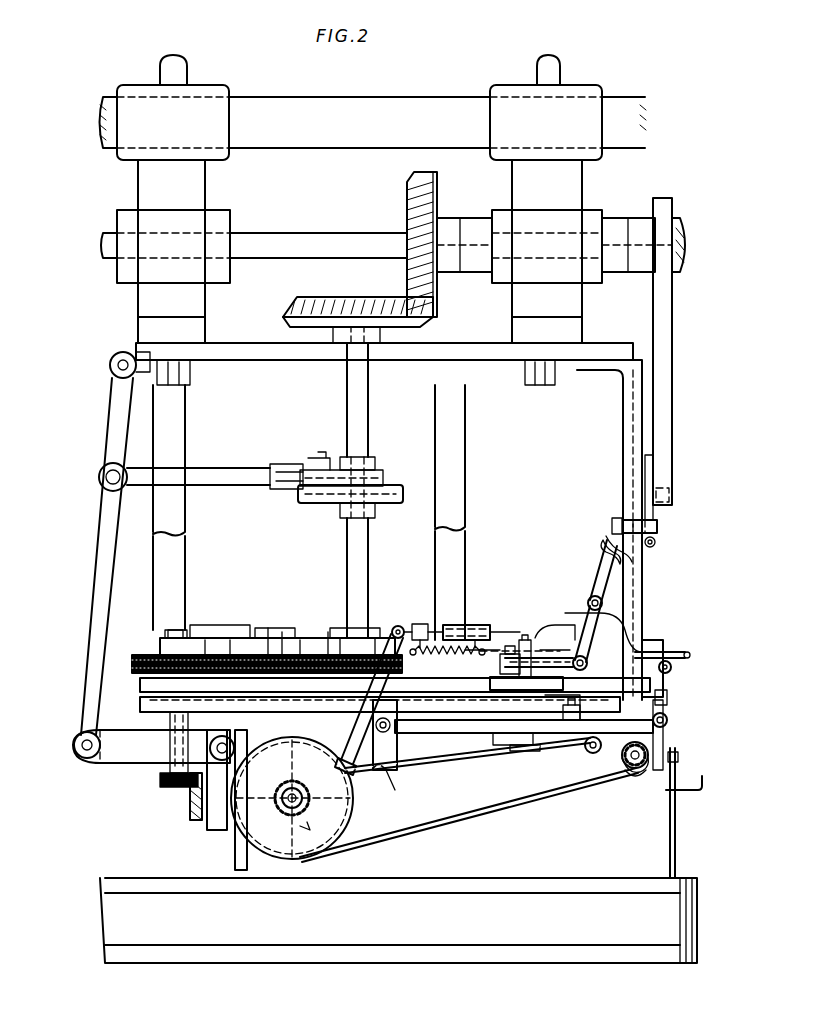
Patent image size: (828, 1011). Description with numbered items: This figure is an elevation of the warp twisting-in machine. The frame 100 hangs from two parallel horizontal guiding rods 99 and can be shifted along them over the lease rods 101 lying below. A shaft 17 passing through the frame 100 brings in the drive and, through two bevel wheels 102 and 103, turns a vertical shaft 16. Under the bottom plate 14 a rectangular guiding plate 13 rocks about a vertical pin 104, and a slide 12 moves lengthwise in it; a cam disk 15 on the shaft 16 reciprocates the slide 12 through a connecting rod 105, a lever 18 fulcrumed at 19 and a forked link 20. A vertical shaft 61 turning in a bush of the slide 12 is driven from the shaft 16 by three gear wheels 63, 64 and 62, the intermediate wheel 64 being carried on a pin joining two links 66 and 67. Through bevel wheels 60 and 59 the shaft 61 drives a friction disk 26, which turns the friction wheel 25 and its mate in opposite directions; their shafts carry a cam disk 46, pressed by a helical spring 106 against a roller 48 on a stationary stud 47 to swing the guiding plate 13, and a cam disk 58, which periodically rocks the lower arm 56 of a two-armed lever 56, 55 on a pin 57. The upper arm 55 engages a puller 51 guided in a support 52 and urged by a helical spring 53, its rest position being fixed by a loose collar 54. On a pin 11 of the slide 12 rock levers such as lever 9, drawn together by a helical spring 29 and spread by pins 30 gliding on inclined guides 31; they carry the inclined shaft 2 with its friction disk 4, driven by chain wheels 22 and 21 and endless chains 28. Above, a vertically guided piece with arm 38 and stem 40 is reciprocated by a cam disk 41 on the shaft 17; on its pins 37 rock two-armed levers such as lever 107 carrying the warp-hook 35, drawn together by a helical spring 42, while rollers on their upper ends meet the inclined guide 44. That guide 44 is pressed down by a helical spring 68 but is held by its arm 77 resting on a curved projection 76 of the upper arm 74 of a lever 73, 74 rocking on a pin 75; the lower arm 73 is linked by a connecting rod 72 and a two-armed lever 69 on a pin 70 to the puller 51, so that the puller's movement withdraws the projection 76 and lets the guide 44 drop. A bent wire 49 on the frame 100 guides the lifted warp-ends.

The shaft 2 is at (628, 768).
The friction disk 4 is at (636, 772).
The lever 9 is at (640, 726).
The pin 11 is at (506, 740).
The slide 12 is at (168, 712).
The guiding plate 13 is at (152, 692).
The bottom plate 14 is at (144, 668).
The cam disk 15 is at (402, 490).
The vertical shaft 16 is at (357, 566).
The shaft 17 is at (318, 248).
The lever 18 is at (108, 558).
The fulcrum 19 is at (110, 363).
The forked link 20 is at (142, 752).
The chain wheel 21 is at (622, 762).
The chain wheel 22 is at (292, 814).
The friction wheel 25 is at (294, 860).
The friction disk 26 is at (235, 867).
The endless chain 28 is at (462, 808).
The helical spring 29 is at (588, 754).
The pin 30 is at (580, 708).
The inclined guide 31 is at (590, 718).
The warp-hook 35 is at (676, 852).
The pin 37 is at (667, 718).
The arm of the vertically guided piece 38 is at (667, 698).
The stem of the vertically guided piece 40 is at (648, 594).
The cam disk 41 is at (664, 430).
The helical spring 42 is at (671, 667).
The inclined guide 44 is at (655, 492).
The cam disk 46 is at (244, 770).
The stationary stud 47 is at (353, 736).
The roller 48 is at (352, 758).
The bent wire 49 is at (682, 786).
The puller 51 is at (680, 650).
The support 52 is at (486, 630).
The helical spring 53 is at (476, 624).
The loose collar 54 is at (418, 624).
The upper arm of two-armed lever 55 is at (396, 626).
The lower arm of two-armed lever 56 is at (386, 768).
The pin 57 is at (396, 744).
The cam disk 58 is at (335, 842).
The bevel wheel 59 is at (195, 818).
The bevel wheel 60 is at (169, 785).
The vertical shaft 61 is at (178, 632).
The gear wheel 62 is at (204, 642).
The gear wheel 63 is at (328, 644).
The gear wheel 64 is at (282, 640).
The link 66 is at (224, 652).
The link 67 is at (302, 650).
The helical spring 68 is at (656, 542).
The two-armed lever 69 is at (535, 634).
The pin 70 is at (525, 640).
The connecting rod 72 is at (587, 663).
The lower arm of two-armed lever 73 is at (598, 618).
The upper arm of two-armed lever 74 is at (594, 570).
The pin 75 is at (602, 601).
The curved projection 76 is at (601, 540).
The arm 77 is at (608, 520).
The guiding rod 99 is at (372, 116).
The frame 100 is at (165, 188).
The lease rod 101 is at (454, 900).
The bevel wheel 102 is at (419, 194).
The bevel wheel 103 is at (299, 298).
The vertical pin 104 is at (264, 640).
The connecting rod 105 is at (220, 468).
The helical spring 106 is at (448, 768).
The two-armed lever 107 is at (665, 640).